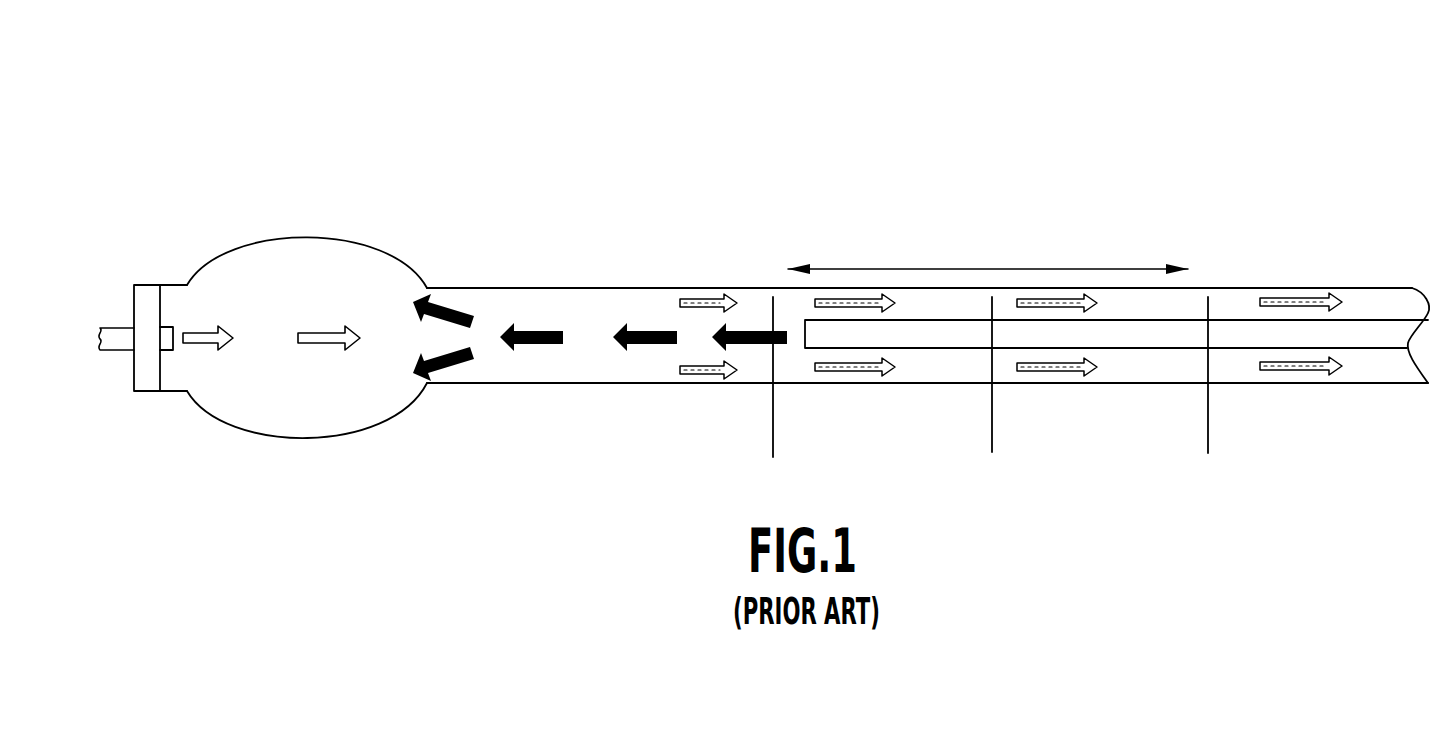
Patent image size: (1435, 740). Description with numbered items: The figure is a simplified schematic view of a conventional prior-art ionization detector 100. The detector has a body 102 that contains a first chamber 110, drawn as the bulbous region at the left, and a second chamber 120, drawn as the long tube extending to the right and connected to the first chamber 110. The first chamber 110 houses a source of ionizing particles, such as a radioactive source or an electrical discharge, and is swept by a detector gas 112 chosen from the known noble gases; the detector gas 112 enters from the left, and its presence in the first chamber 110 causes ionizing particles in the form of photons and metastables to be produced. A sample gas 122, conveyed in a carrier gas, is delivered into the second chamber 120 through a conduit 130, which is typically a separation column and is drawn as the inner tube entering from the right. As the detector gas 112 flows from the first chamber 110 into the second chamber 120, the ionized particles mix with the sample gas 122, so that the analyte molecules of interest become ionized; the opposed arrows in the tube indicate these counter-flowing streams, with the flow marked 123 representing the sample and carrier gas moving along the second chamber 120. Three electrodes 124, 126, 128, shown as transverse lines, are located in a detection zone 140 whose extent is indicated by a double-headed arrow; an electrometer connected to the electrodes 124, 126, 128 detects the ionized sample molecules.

The ionization detector 100 is at (570, 130).
The body 102 is at (670, 288).
The first chamber 110 is at (380, 257).
The detector gas 112 is at (205, 325).
The second chamber 120 is at (628, 383).
The sample gas 122 is at (533, 343).
The forward flow arrows 123 is at (893, 368).
The electrode 124 is at (775, 368).
The electrode 126 is at (993, 368).
The electrode 128 is at (1208, 368).
The conduit 130 is at (1367, 318).
The detection zone 140 is at (980, 268).